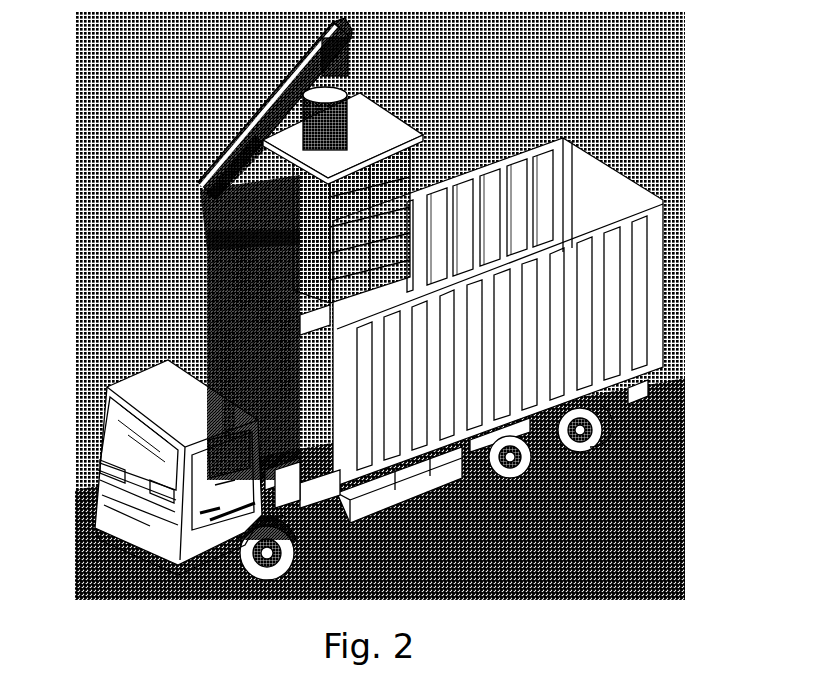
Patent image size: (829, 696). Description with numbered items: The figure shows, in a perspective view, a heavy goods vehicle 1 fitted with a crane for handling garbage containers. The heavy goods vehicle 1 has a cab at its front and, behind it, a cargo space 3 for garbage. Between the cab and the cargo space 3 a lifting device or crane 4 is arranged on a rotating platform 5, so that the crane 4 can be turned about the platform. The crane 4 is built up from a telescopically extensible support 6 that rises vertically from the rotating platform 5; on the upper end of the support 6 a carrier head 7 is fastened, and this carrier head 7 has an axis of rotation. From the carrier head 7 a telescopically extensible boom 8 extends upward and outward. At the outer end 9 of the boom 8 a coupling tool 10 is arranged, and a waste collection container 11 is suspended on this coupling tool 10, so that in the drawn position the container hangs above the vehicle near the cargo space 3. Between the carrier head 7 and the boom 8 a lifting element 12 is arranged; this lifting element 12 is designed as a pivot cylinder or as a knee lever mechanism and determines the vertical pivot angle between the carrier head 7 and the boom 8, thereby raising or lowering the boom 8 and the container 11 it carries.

The heavy goods vehicle 1 is at (382, 334).
The cargo space 3 is at (543, 312).
The crane 4 is at (268, 243).
The rotating platform 5 is at (298, 495).
The telescopically extensible support 6 is at (219, 355).
The carrier head 7 is at (202, 210).
The telescopically extensible boom 8 is at (268, 176).
The outer end 9 is at (352, 29).
The coupling tool 10 is at (408, 56).
The waste collection container 11 is at (410, 190).
The lifting element 12 is at (210, 149).